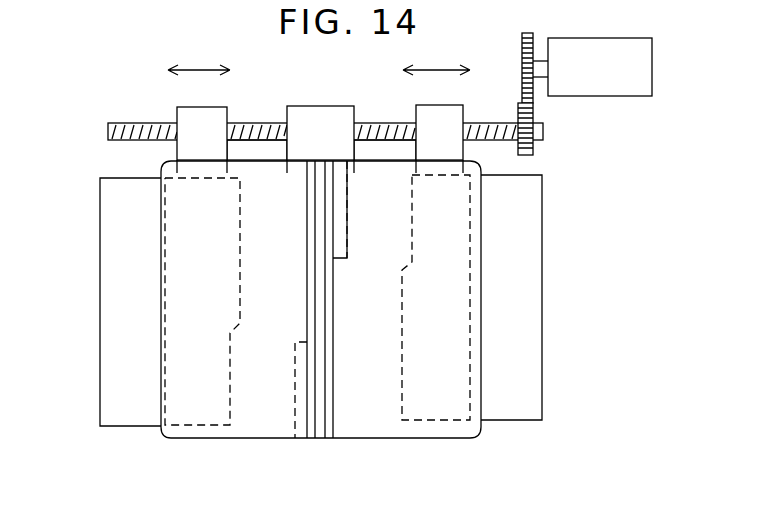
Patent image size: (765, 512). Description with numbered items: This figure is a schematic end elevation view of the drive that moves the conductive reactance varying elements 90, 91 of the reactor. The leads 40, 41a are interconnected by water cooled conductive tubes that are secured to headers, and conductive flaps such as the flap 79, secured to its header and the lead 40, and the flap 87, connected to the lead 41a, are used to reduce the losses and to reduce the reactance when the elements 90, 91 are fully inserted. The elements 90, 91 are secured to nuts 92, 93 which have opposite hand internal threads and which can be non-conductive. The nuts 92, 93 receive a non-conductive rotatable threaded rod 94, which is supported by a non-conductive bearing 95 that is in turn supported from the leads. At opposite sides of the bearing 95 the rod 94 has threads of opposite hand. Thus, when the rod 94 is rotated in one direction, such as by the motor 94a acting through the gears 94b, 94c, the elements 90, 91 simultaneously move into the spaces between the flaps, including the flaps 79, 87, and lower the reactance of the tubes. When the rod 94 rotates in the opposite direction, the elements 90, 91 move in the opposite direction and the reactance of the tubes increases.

The lead 40 is at (332, 341).
The lead 41a is at (310, 276).
The flap 79 is at (442, 428).
The flap 87 is at (208, 432).
The element 90 is at (532, 318).
The element 91 is at (105, 264).
The nut 92 is at (430, 112).
The nut 93 is at (203, 112).
The threaded rod 94 is at (383, 121).
The motor 94a is at (609, 50).
The gear 94b is at (522, 52).
The gear 94c is at (534, 110).
The bearing 95 is at (322, 112).